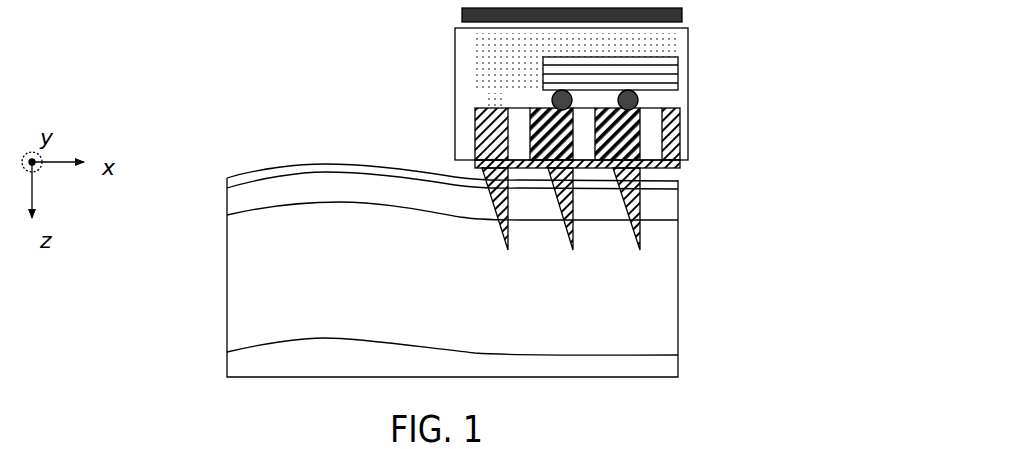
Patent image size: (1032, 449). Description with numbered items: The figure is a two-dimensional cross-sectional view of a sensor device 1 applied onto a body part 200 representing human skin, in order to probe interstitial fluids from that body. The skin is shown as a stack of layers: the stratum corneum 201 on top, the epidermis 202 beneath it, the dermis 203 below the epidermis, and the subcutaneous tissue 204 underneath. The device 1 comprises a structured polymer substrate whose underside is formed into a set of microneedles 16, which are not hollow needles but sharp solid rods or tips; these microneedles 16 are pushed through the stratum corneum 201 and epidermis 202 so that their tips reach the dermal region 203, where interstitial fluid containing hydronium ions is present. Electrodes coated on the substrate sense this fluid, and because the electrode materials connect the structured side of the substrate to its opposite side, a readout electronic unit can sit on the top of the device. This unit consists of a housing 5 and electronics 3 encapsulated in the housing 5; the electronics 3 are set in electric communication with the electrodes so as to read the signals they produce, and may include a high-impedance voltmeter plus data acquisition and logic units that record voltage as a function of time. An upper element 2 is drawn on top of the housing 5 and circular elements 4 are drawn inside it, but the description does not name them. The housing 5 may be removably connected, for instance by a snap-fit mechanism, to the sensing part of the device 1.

The sensor device 1 is at (383, 94).
The upper layer / bar element 2 is at (686, 14).
The electronics 3 is at (525, 160).
The circular elements 4 is at (640, 96).
The housing 5 is at (466, 65).
The microneedles 16 is at (496, 218).
The body part 200 is at (788, 172).
The stratum corneum 201 is at (683, 185).
The epidermis 202 is at (658, 208).
The dermis 203 is at (662, 290).
The subcutaneous tissue layer 204 is at (663, 368).